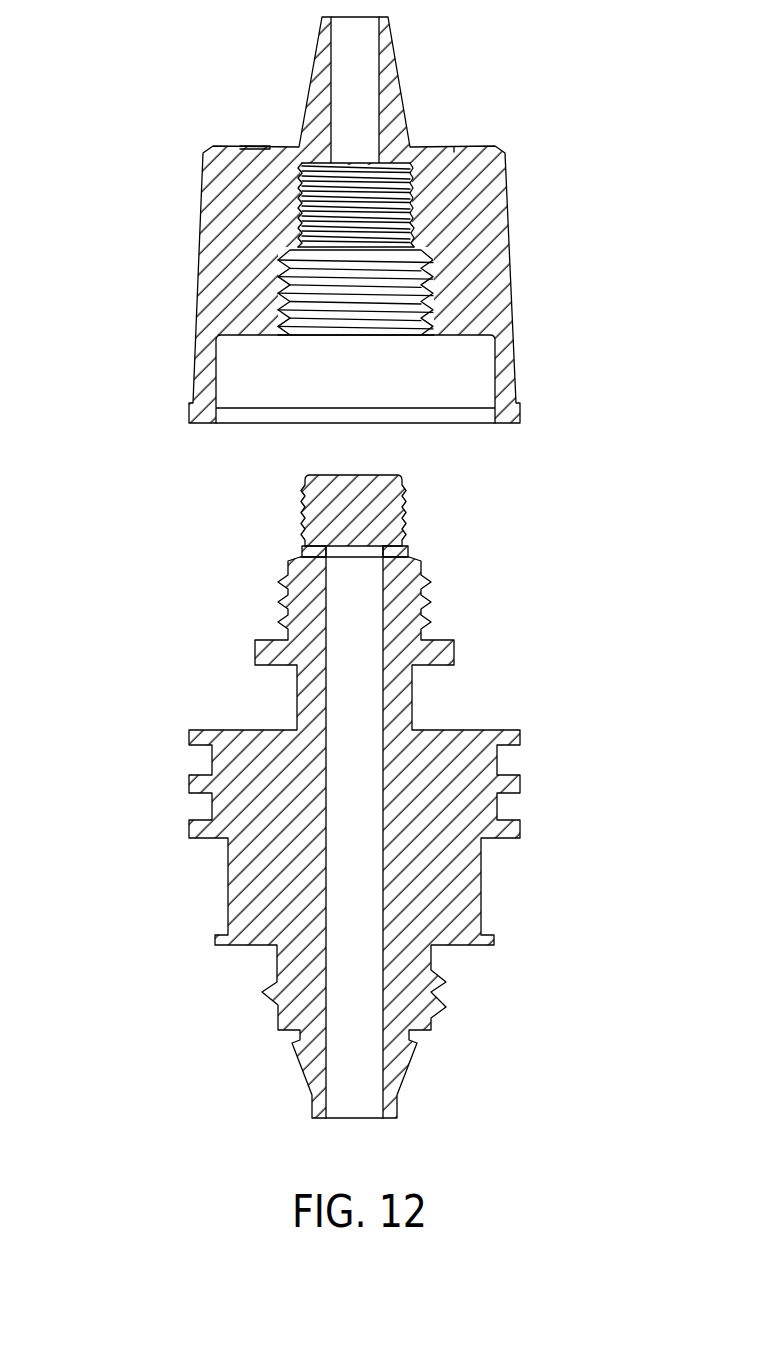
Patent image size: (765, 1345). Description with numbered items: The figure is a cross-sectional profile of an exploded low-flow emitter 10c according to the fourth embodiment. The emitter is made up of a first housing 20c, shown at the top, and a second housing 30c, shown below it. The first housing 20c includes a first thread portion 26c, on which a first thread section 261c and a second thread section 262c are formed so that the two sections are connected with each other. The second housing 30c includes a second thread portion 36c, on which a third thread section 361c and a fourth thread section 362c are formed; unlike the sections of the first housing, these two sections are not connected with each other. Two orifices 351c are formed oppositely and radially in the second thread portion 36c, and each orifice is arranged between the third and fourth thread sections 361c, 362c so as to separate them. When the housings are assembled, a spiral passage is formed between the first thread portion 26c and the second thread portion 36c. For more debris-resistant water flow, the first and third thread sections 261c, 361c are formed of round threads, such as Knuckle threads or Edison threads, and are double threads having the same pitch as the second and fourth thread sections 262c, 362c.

The low-flow emitter 10c is at (645, 230).
The first housing 20c is at (333, 220).
The first thread portion 26c is at (95, 195).
The first thread section 261c is at (300, 204).
The second thread section 262c is at (279, 280).
The second housing 30c is at (342, 796).
The second thread portion 36c is at (112, 502).
The third thread section 361c is at (298, 513).
The fourth thread section 362c is at (274, 588).
The orifices 351c is at (398, 547).